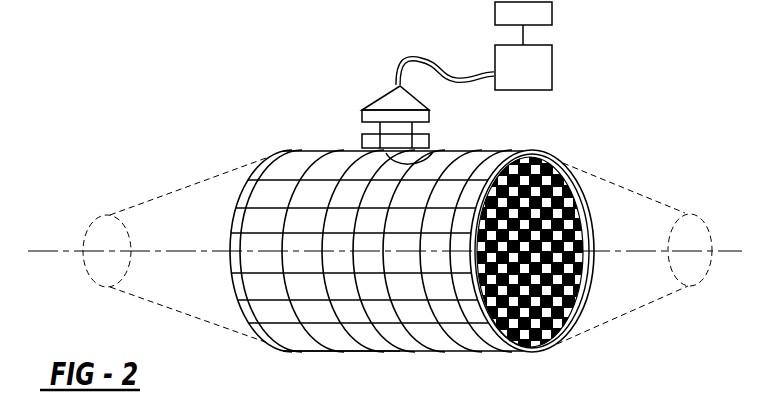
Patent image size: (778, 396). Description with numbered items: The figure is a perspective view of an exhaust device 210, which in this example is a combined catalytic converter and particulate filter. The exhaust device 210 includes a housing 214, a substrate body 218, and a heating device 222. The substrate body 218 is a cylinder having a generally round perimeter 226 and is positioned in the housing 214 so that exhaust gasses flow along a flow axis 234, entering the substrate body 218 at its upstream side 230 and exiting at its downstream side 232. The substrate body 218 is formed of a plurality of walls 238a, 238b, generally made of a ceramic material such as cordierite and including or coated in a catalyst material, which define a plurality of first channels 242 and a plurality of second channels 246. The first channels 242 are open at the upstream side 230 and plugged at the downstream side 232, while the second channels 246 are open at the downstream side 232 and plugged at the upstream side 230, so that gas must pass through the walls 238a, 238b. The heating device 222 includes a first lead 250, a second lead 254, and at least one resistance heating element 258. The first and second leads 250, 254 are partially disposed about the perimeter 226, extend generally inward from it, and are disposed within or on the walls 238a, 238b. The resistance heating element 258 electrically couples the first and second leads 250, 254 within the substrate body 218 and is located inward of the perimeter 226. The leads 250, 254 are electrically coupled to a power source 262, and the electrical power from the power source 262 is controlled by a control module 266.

The exhaust device 210 is at (170, 78).
The housing 214 is at (150, 199).
The substrate body 218 is at (477, 163).
The heating device 222 is at (354, 128).
The perimeter 226 is at (533, 351).
The upstream side 230 is at (557, 163).
The downstream side 232 is at (243, 197).
The flow axis 234 is at (48, 252).
The wall 238a is at (572, 190).
The wall 238b is at (580, 200).
The first channels 242 is at (583, 307).
The second channels 246 is at (597, 258).
The first lead 250 is at (352, 163).
The second lead 254 is at (438, 147).
The resistance heating element 258 is at (406, 373).
The power source 262 is at (545, 12).
The control module 266 is at (545, 65).